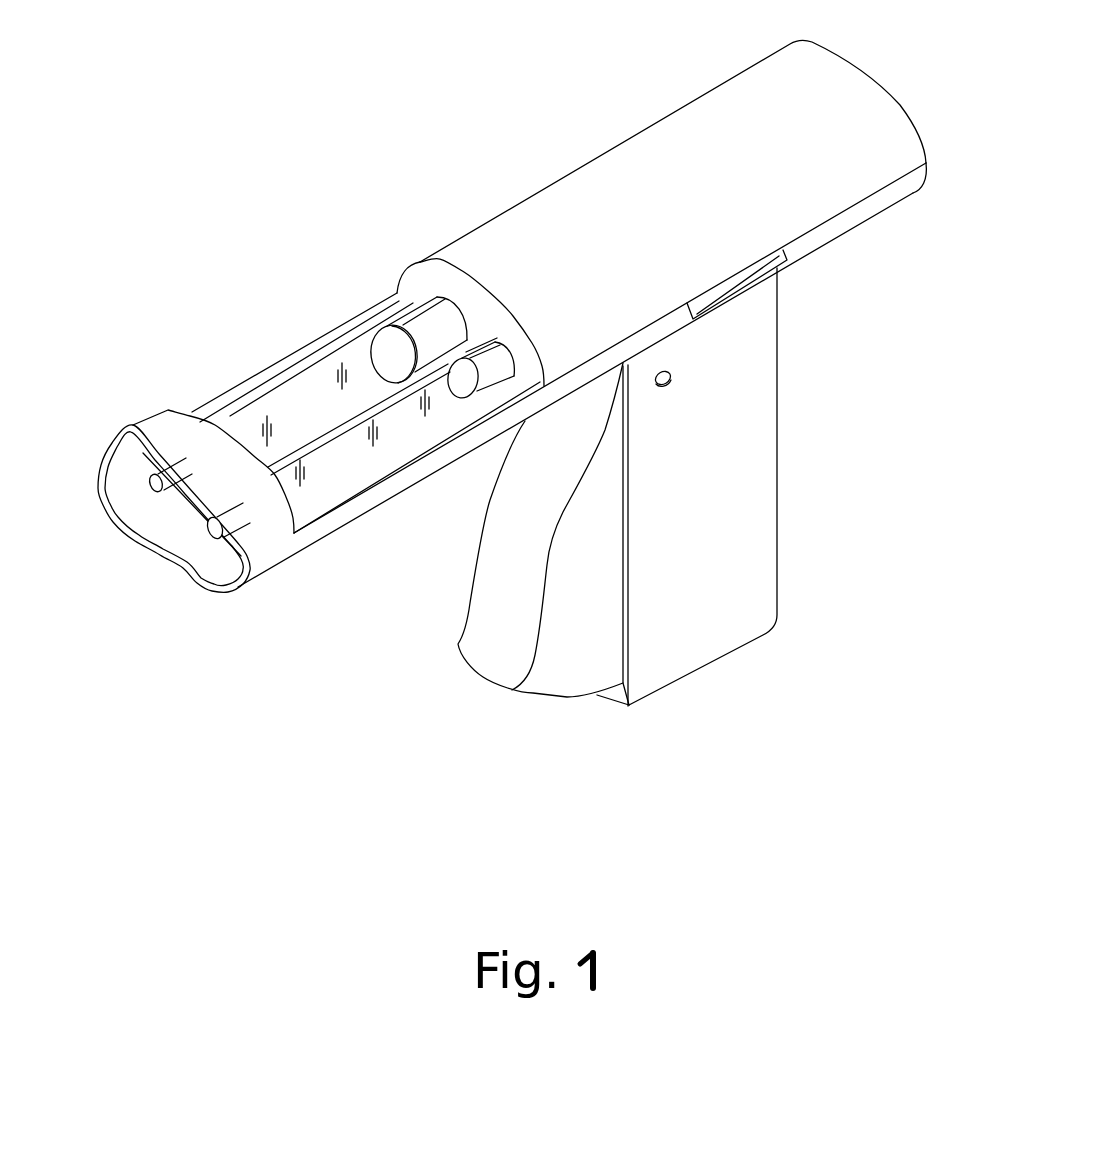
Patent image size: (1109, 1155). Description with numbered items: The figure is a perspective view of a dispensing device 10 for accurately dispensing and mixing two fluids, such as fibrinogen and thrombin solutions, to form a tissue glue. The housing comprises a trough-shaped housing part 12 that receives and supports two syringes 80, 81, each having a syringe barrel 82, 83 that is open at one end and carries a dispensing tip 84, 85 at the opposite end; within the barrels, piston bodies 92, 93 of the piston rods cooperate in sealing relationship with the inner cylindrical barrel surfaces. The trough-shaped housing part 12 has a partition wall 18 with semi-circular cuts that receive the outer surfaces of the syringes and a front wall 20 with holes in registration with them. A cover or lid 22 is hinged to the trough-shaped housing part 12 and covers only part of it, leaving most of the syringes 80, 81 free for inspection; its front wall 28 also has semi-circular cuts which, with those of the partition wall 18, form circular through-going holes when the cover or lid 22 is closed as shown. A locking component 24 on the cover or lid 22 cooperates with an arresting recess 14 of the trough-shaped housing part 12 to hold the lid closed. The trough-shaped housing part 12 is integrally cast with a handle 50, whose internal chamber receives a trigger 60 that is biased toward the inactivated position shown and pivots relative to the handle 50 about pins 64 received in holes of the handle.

The dispensing device 10 is at (478, 403).
The trough-shaped housing part 12 is at (380, 497).
The arresting recess 14 is at (748, 285).
The partition wall 18 is at (490, 404).
The front wall 20 is at (190, 512).
The cover or lid 22 is at (587, 187).
The locking component 24 is at (787, 272).
The front wall 28 is at (420, 272).
The handle 50 is at (757, 543).
The trigger 60 is at (557, 680).
The pin 64 is at (680, 373).
The syringe 80 is at (304, 403).
The syringe 81 is at (323, 484).
The syringe barrel 82 is at (246, 418).
The syringe barrel 83 is at (350, 447).
The dispensing tip 84 is at (150, 482).
The dispensing tip 85 is at (195, 524).
The piston body 92 is at (381, 355).
The piston body 93 is at (470, 343).